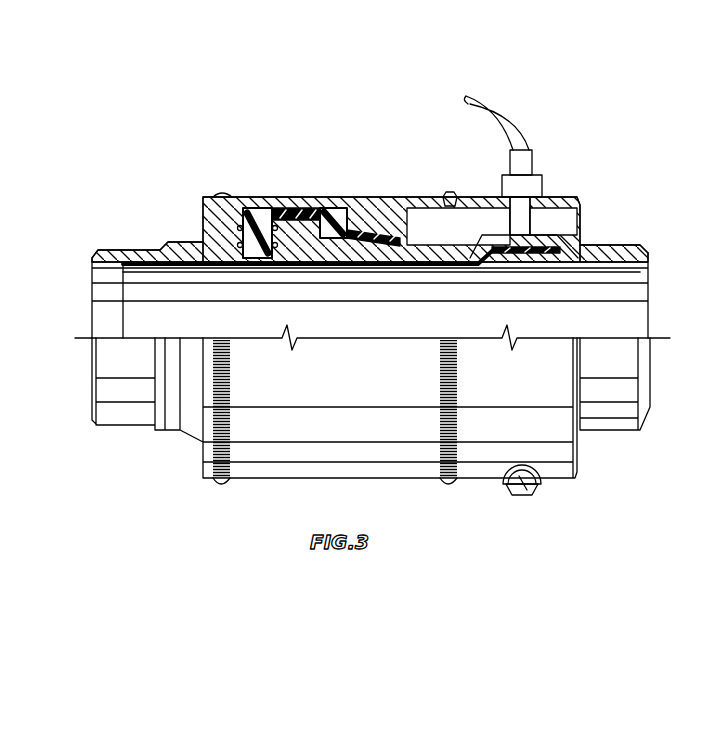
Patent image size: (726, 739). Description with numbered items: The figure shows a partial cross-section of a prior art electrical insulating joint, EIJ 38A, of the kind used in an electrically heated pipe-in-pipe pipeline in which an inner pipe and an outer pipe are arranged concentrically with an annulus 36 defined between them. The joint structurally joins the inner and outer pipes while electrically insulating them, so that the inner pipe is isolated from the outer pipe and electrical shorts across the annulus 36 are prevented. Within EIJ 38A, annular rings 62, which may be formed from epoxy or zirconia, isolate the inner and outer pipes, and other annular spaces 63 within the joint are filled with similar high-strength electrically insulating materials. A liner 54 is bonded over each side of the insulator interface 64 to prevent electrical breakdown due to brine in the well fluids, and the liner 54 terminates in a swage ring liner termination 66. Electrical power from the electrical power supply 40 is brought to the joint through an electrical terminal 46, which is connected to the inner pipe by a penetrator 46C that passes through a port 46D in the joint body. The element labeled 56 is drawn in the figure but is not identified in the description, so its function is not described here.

The annulus 36 is at (447, 230).
The electrical insulating joint 38A is at (138, 500).
The electrical power supply 40 is at (517, 122).
The electrical terminal 46 is at (561, 171).
The penetrator 46C is at (525, 222).
The port 46D is at (505, 187).
The liner 54 is at (205, 266).
The drain plug 56 is at (530, 487).
The annular rings 62 is at (255, 205).
The annular spaces 63 is at (293, 210).
The insulator interface 64 is at (258, 277).
The swage ring liner termination 66 is at (522, 268).